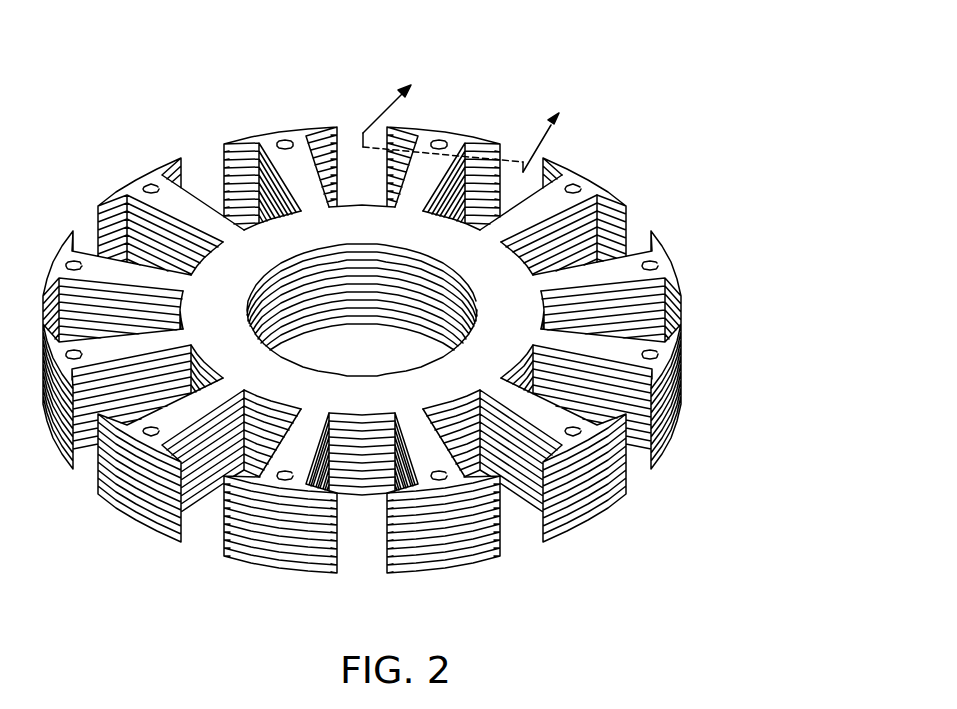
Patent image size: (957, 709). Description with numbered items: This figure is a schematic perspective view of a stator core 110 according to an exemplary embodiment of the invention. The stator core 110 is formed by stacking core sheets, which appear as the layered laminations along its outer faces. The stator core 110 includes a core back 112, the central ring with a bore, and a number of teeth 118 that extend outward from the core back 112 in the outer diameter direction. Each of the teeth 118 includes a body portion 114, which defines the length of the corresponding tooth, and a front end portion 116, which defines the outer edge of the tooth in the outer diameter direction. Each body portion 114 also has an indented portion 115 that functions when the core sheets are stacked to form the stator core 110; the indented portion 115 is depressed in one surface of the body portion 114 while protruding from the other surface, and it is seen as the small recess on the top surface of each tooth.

The stator core 110 is at (456, 292).
The core back 112 is at (497, 343).
The body portion 114 is at (525, 218).
The indented portion 115 is at (575, 190).
The front end portion 116 is at (577, 177).
The teeth 118 is at (674, 198).